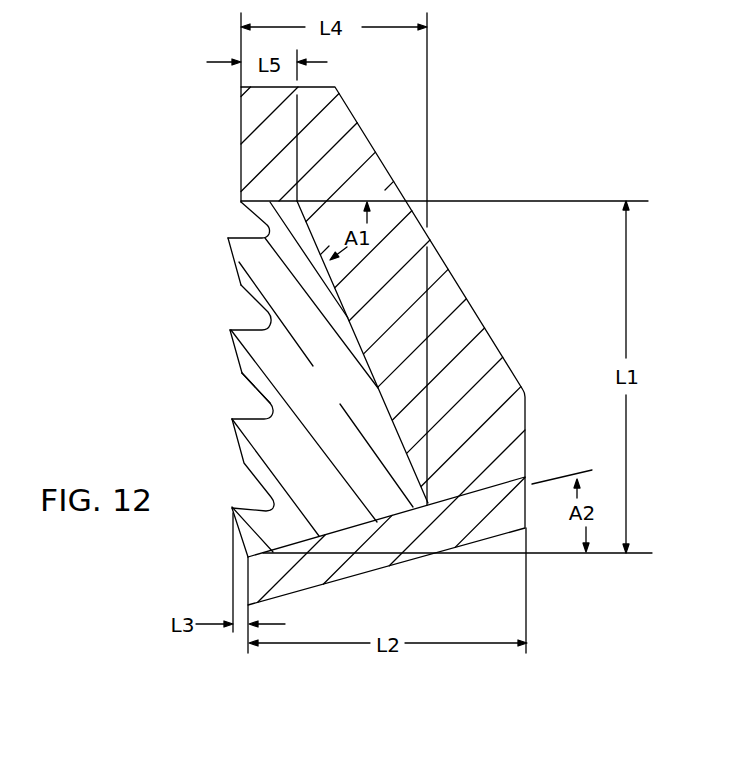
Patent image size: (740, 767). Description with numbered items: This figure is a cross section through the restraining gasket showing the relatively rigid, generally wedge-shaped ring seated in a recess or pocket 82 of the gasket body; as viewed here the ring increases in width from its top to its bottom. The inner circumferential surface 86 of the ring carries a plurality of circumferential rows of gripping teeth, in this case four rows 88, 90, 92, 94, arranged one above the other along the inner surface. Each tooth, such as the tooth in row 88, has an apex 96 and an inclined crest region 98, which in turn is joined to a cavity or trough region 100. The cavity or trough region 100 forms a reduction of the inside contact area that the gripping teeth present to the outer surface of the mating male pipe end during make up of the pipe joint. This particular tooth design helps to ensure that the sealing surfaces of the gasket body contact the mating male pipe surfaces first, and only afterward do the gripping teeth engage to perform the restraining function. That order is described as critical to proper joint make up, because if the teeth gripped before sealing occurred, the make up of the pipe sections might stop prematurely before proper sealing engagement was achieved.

The recess or pocket 82 is at (367, 362).
The inner circumferential surface 86 is at (231, 380).
The row of gripping teeth 88 is at (237, 272).
The row of gripping teeth 90 is at (235, 358).
The row of gripping teeth 92 is at (238, 445).
The row of gripping teeth 94 is at (232, 538).
The apex 96 is at (228, 237).
The inclined crest region 98 is at (230, 248).
The cavity or trough region 100 is at (230, 329).